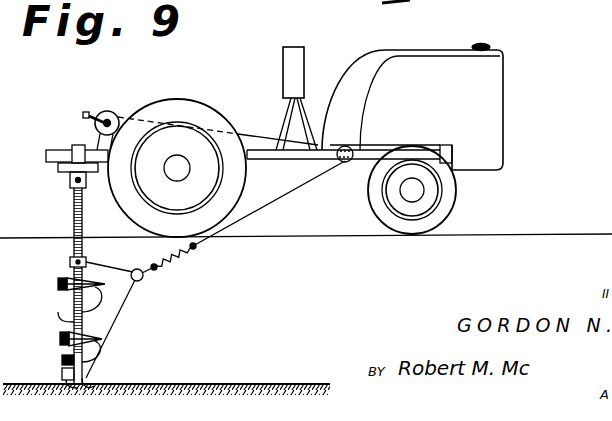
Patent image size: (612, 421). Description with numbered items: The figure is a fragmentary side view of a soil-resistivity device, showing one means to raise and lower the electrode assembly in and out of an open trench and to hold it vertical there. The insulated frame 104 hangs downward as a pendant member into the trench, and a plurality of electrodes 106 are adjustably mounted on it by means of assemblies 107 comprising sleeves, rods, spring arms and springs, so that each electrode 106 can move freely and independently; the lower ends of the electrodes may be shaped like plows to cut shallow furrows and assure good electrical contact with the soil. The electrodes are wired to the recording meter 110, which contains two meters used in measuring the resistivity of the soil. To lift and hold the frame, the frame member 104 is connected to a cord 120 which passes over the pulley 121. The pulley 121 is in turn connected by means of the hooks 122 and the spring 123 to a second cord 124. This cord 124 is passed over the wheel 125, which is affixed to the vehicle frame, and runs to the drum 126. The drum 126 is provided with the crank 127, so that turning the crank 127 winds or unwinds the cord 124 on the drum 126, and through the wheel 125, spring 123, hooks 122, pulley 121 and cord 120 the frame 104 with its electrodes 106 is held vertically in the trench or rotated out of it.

The insulated frame 104 is at (73, 217).
The electrodes 106 is at (66, 318).
The assemblies 107 is at (62, 372).
The recording meter 110 is at (283, 56).
The cord 120 is at (118, 314).
The pulley 121 is at (154, 278).
The hooks 122 is at (197, 248).
The spring 123 is at (176, 260).
The cord 124 is at (262, 199).
The wheel 125 is at (346, 163).
The drum 126 is at (110, 111).
The crank 127 is at (86, 112).